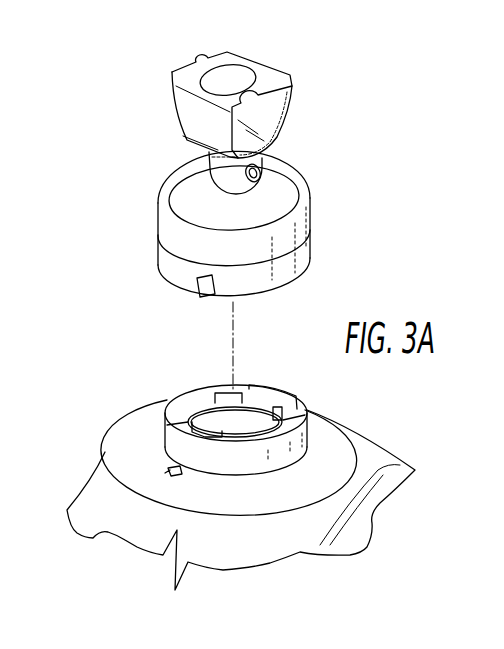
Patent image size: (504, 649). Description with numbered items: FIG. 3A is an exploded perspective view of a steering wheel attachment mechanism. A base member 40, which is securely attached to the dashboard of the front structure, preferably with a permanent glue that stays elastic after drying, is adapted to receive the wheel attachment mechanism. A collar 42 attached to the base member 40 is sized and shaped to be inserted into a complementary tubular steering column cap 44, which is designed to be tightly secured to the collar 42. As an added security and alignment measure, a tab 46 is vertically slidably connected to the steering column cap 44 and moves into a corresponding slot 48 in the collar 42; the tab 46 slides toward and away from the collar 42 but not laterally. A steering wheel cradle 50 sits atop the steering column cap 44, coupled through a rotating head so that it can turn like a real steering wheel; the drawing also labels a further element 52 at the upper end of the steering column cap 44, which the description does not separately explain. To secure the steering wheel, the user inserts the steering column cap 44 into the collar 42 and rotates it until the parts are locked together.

The base member 40 is at (322, 460).
The collar 42 is at (197, 388).
The steering column cap 44 is at (282, 240).
The tab 46 is at (197, 293).
The slot 48 is at (260, 170).
The steering wheel cradle 50 is at (312, 95).
The ball joint 52 is at (277, 183).